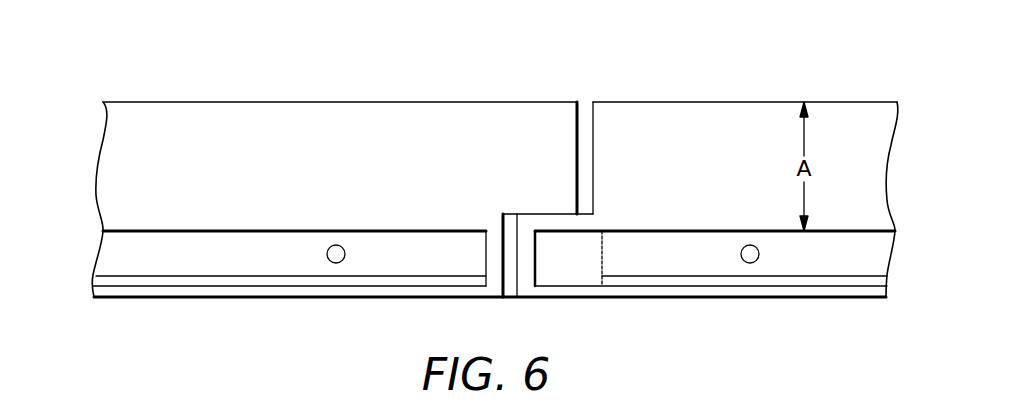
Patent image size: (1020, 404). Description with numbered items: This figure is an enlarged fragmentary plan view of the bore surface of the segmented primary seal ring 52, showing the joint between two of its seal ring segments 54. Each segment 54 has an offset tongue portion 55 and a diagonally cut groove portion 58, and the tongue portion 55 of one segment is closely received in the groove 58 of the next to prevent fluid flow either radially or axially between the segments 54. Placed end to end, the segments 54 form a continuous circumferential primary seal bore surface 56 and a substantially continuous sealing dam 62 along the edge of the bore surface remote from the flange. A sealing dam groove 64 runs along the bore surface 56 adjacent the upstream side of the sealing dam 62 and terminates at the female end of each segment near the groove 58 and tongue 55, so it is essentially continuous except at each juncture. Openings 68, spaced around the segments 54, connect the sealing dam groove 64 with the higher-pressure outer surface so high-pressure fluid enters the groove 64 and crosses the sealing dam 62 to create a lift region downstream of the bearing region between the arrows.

The segmented primary seal ring 52 is at (423, 101).
The seal ring segment 54 is at (617, 102).
The offset tongue portion 55 is at (528, 289).
The primary seal bore surface 56 is at (138, 155).
The diagonally cut groove portion 58 is at (510, 275).
The sealing dam 62 is at (232, 292).
The sealing dam groove 64 is at (132, 252).
The openings 68 is at (345, 255).